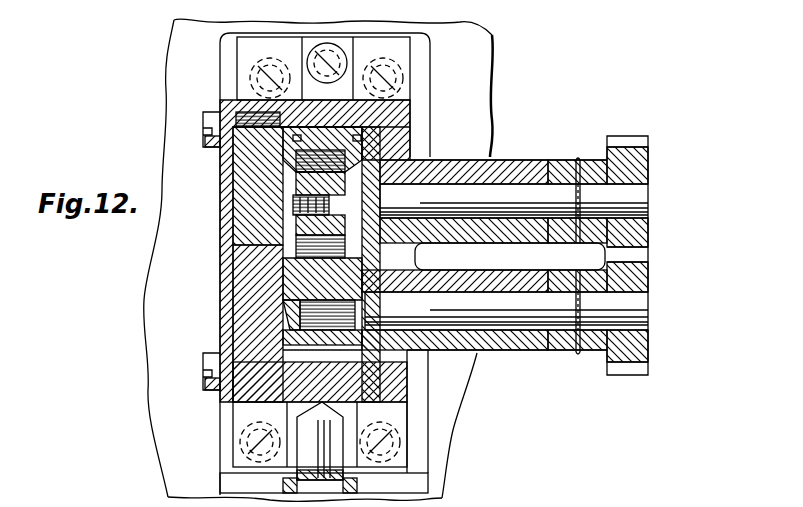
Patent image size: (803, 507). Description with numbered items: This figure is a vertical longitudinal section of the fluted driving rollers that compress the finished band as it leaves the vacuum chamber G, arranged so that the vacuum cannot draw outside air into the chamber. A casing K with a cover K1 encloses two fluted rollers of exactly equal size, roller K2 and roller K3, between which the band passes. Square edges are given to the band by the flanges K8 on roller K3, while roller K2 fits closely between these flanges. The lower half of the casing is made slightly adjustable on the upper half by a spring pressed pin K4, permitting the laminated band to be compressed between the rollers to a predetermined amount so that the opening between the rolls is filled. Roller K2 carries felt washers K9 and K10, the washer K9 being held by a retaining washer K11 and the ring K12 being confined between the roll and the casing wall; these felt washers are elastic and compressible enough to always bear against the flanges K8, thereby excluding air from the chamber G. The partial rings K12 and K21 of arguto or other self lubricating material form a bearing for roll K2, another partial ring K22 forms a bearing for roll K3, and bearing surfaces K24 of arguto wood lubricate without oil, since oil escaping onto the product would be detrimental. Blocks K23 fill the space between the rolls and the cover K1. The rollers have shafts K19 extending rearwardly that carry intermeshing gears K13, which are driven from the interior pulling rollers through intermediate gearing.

The vacuum chamber G is at (136, 311).
The casing K is at (412, 99).
The cover K1 is at (152, 88).
The fluted roller K2 is at (400, 136).
The roller K3 is at (104, 376).
The spring pressed pin K4 is at (300, 440).
The flange K8 is at (175, 338).
The felt washer K9 is at (181, 258).
The felt washer K10 is at (400, 152).
The retaining washer K11 is at (131, 168).
The partial ring K12 is at (138, 136).
The intermeshing gear K13 is at (688, 142).
The shaft K19 is at (685, 204).
The partial ring K21 is at (363, 100).
The partial ring K22 is at (385, 406).
The block K23 is at (123, 240).
The bearing surface K24 is at (527, 160).